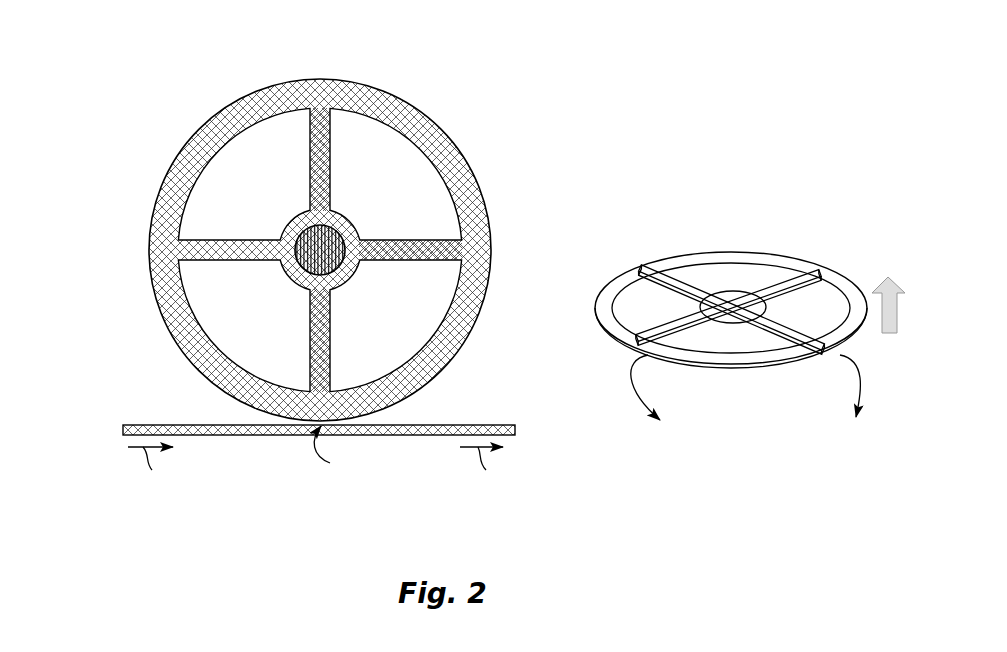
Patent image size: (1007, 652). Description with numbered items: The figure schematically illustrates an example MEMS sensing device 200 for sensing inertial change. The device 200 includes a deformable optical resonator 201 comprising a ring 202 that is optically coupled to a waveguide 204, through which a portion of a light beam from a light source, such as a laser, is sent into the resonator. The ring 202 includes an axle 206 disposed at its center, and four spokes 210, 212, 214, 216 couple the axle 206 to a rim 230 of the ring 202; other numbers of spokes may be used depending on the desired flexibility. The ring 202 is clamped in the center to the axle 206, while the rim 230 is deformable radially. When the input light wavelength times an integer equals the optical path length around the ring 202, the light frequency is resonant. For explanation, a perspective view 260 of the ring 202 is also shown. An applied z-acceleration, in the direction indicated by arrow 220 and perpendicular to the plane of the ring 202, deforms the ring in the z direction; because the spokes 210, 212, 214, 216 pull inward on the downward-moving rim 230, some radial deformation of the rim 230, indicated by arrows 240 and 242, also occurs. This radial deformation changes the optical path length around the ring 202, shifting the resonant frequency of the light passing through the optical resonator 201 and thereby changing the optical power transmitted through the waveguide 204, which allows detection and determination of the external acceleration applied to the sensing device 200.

The MEMS sensing device 200 is at (619, 56).
The deformable optical resonator 201 is at (357, 66).
The ring 202 is at (430, 117).
The waveguide 204 is at (142, 425).
The axle 206 is at (346, 228).
The spoke 210 is at (244, 174).
The spoke 212 is at (281, 116).
The spoke 214 is at (461, 214).
The spoke 216 is at (431, 340).
The rim 230 is at (244, 326).
The perspective view 260 is at (737, 160).
The arrow 220 is at (880, 277).
The arrow 240 is at (650, 403).
The arrow 242 is at (850, 414).